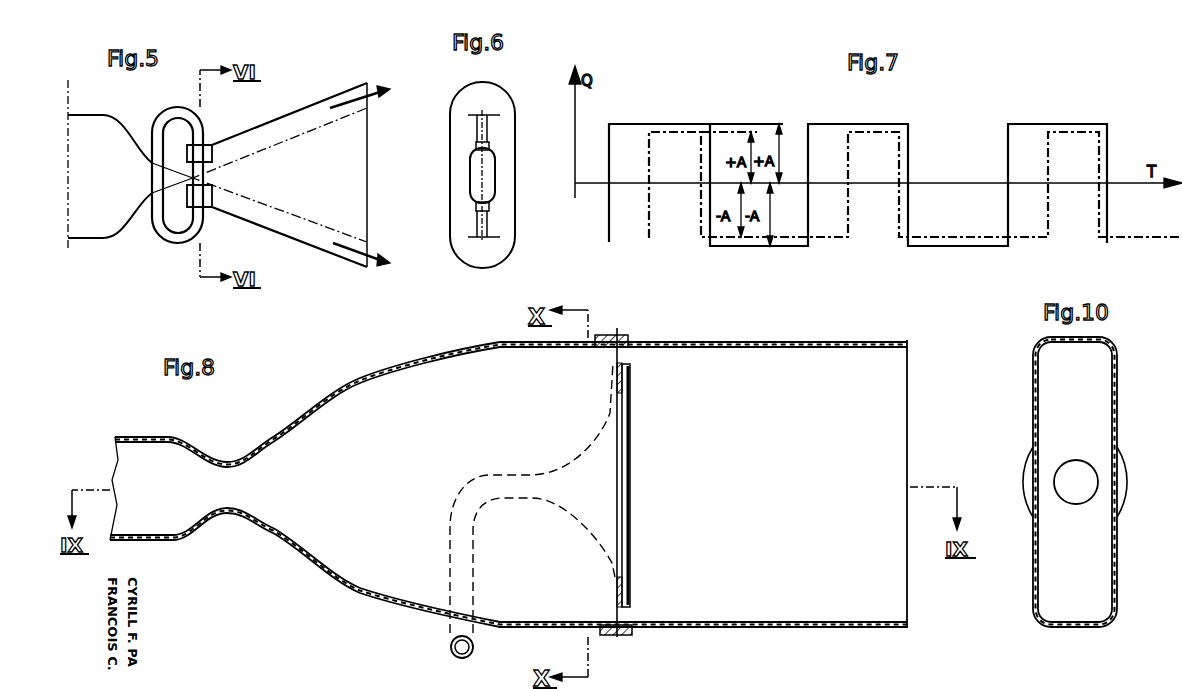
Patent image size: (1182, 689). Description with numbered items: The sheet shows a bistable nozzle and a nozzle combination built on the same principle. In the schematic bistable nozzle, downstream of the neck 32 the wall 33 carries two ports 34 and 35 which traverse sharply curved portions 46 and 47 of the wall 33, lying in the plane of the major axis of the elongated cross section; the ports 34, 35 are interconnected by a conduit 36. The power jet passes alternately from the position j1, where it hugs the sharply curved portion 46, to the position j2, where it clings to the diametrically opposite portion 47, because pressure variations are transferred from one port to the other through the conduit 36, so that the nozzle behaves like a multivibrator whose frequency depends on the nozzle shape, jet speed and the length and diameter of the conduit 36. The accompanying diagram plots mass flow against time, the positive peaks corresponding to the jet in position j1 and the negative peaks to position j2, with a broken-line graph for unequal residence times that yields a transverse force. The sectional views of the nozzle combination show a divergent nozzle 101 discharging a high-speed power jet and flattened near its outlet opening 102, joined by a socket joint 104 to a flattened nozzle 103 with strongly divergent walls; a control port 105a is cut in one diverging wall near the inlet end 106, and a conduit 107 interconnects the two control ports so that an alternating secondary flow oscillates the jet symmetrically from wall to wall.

In FIG. 5, the neck 32 is at (157, 162).
In FIG. 5, the wall 33 is at (291, 118).
In FIG. 6, the wall 33 is at (450, 182).
In FIG. 5, the port 34 is at (205, 152).
In FIG. 6, the port 34 is at (476, 147).
In FIG. 5, the port 35 is at (205, 200).
In FIG. 6, the port 35 is at (476, 207).
In FIG. 5, the conduit 36 is at (168, 233).
In FIG. 5, the jet position j1 is at (333, 107).
In FIG. 5, the jet position j2 is at (326, 240).
In FIG. 6, the sharply curved portion 46 is at (487, 84).
In FIG. 6, the sharply curved portion 47 is at (487, 268).
In FIG. 8, the divergent nozzle 101 is at (350, 588).
In FIG. 10, the divergent nozzle 101 is at (1100, 413).
In FIG. 8, the outlet opening 102 is at (608, 610).
In FIG. 10, the outlet opening 102 is at (1117, 583).
In FIG. 8, the flattened nozzle 103 is at (763, 630).
In FIG. 8, the socket joint 104 is at (618, 330).
In FIG. 8, the control port 105a is at (623, 508).
In FIG. 8, the inlet end 106 is at (631, 636).
In FIG. 8, the conduit 107 is at (451, 649).